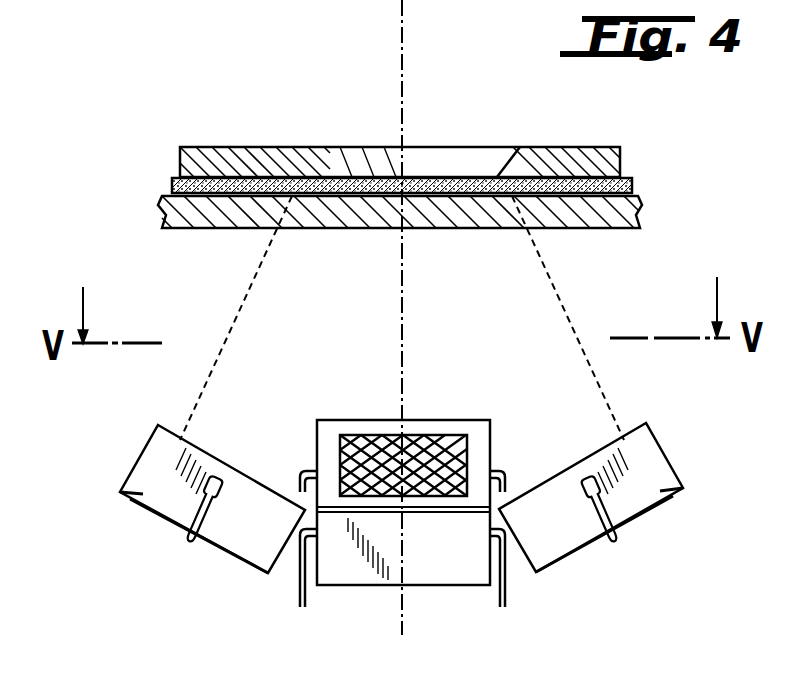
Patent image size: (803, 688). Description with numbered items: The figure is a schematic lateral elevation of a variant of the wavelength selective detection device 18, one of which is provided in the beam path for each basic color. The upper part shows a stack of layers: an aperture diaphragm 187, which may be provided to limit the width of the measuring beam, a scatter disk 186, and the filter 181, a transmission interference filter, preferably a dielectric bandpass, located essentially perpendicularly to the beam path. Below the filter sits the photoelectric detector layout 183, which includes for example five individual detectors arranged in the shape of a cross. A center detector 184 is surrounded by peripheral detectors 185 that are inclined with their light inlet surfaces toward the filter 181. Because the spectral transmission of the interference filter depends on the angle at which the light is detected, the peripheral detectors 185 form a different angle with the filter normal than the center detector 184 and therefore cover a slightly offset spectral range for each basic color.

The wavelength selective detection device 18 is at (379, 193).
The aperture diaphragm 187 is at (552, 162).
The scatter disk 186 is at (632, 181).
The filter 181 is at (587, 212).
The photoelectric detector layout 183 is at (422, 526).
The center detector 184 is at (432, 577).
The peripheral detectors 185 is at (428, 450).